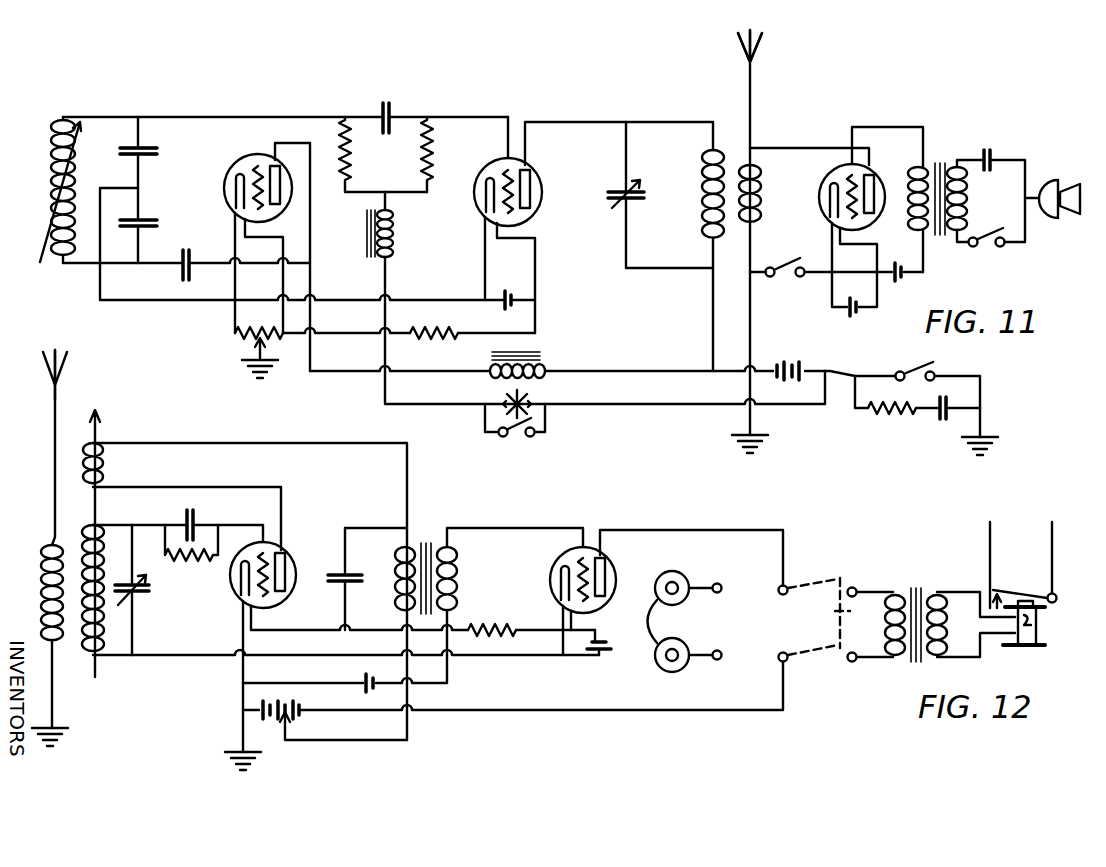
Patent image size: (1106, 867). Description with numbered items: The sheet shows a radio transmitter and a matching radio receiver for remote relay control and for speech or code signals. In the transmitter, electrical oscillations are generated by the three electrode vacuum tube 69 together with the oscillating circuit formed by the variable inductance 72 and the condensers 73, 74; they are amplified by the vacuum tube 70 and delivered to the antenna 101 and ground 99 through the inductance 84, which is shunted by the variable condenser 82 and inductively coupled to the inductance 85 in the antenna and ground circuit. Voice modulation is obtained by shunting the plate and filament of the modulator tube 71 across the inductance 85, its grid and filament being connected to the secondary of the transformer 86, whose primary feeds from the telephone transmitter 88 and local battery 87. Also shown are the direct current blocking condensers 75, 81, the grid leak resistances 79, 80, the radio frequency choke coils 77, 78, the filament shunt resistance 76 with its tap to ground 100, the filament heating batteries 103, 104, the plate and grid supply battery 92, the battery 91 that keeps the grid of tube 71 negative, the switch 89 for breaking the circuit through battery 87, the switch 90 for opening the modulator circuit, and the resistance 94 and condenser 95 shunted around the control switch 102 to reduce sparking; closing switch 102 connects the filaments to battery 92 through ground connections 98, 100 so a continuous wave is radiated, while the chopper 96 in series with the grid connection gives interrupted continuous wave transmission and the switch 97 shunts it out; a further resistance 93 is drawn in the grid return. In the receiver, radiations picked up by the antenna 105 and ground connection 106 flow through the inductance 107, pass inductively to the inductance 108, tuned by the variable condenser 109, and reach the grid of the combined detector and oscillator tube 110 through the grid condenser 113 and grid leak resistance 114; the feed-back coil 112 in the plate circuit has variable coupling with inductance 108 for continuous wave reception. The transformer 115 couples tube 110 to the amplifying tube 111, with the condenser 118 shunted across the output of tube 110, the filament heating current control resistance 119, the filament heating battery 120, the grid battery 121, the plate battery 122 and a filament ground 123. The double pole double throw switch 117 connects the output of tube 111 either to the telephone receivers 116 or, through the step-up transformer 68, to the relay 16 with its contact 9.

In FIG. 11, the variable inductance 72 is at (52, 188).
In FIG. 11, the condenser 73 is at (145, 150).
In FIG. 11, the condenser 74 is at (145, 222).
In FIG. 11, the direct current blocking condenser 75 is at (187, 251).
In FIG. 11, the three electrode vacuum tube 69 is at (262, 143).
In FIG. 11, the filament shunt resistance 76 is at (247, 340).
In FIG. 11, the ground 100 is at (290, 372).
In FIG. 11, the grid leak resistance 79 is at (357, 169).
In FIG. 11, the grid leak resistance 80 is at (432, 172).
In FIG. 11, the direct current blocking condenser 81 is at (392, 111).
In FIG. 11, the radio frequency choke coil 77 is at (392, 252).
In FIG. 11, the three electrode vacuum tube 70 is at (540, 172).
In FIG. 11, the filament heating battery 103 is at (508, 310).
In FIG. 11, the resistor 93 is at (456, 343).
In FIG. 11, the radio frequency choke coil 78 is at (546, 362).
In FIG. 11, the chopper 96 is at (533, 398).
In FIG. 11, the switch 97 is at (505, 441).
In FIG. 11, the variable condenser 82 is at (641, 198).
In FIG. 11, the inductance 84 is at (700, 202).
In FIG. 11, the inductance 85 is at (760, 212).
In FIG. 11, the antenna 101 is at (768, 38).
In FIG. 11, the three electrode vacuum tube 71 is at (884, 178).
In FIG. 11, the transformer 86 is at (946, 160).
In FIG. 11, the local battery 87 is at (998, 157).
In FIG. 11, the telephone transmitter 88 is at (1060, 182).
In FIG. 11, the switch 89 is at (984, 252).
In FIG. 11, the switch 90 is at (780, 280).
In FIG. 11, the battery 91 is at (902, 282).
In FIG. 11, the filament heating battery 104 is at (852, 317).
In FIG. 11, the plate and grid supply battery 92 is at (790, 382).
In FIG. 11, the ground 99 is at (760, 434).
In FIG. 11, the control switch 102 is at (938, 370).
In FIG. 11, the resistance 94 is at (904, 418).
In FIG. 11, the condenser 95 is at (940, 424).
In FIG. 11, the ground connection 98 is at (985, 435).
In FIG. 12, the antenna 105 is at (78, 358).
In FIG. 12, the inductance 107 is at (38, 597).
In FIG. 12, the ground connection 106 is at (68, 716).
In FIG. 12, the feed-back coil 112 is at (104, 464).
In FIG. 12, the inductance 108 is at (110, 542).
In FIG. 12, the variable condenser 109 is at (165, 598).
In FIG. 12, the grid condenser 113 is at (200, 518).
In FIG. 12, the grid leak resistance 114 is at (188, 573).
In FIG. 12, the combined detector and oscillator tube 110 is at (298, 565).
In FIG. 12, the condenser 118 is at (378, 565).
In FIG. 12, the transformer 115 is at (432, 528).
In FIG. 12, the filament heating current control resistance 119 is at (505, 619).
In FIG. 12, the amplifying tube 111 is at (612, 580).
In FIG. 12, the filament heating battery 120 is at (613, 636).
In FIG. 12, the amplifier grid battery 121 is at (356, 684).
In FIG. 12, the plate battery 122 is at (304, 725).
In FIG. 12, the ground 123 is at (256, 745).
In FIG. 12, the telephone receivers 116 is at (692, 580).
In FIG. 12, the double pole double throw switch 117 is at (848, 572).
In FIG. 12, the step-up transformer 68 is at (920, 586).
In FIG. 12, the relay contact 9 is at (1058, 565).
In FIG. 12, the relay 16 is at (1045, 628).